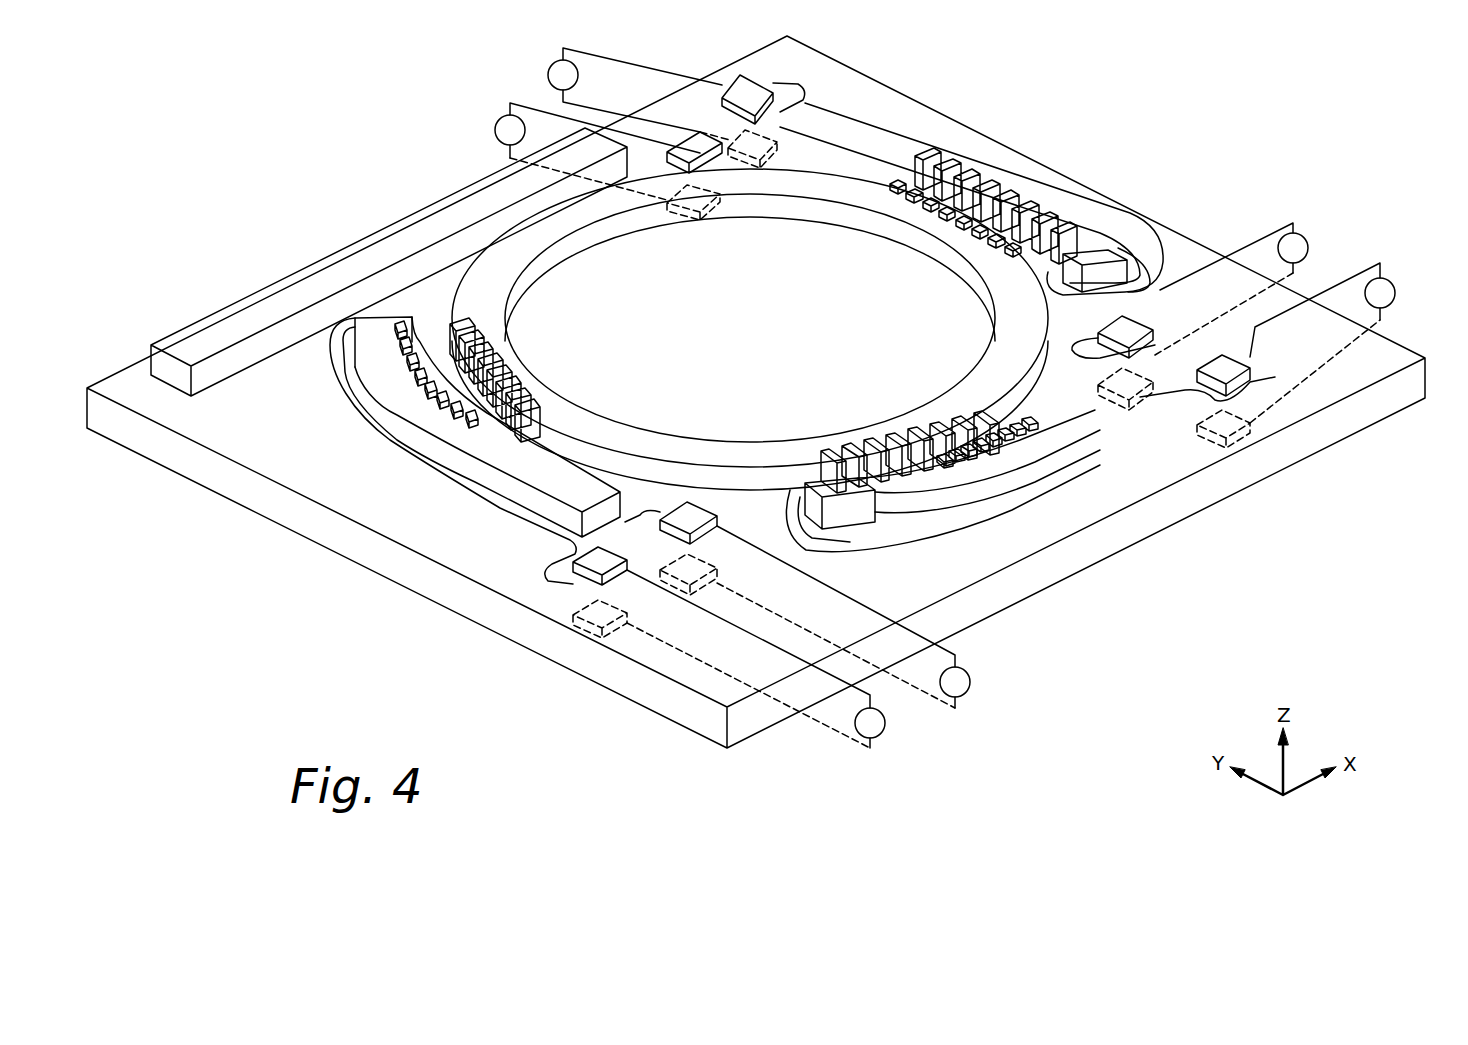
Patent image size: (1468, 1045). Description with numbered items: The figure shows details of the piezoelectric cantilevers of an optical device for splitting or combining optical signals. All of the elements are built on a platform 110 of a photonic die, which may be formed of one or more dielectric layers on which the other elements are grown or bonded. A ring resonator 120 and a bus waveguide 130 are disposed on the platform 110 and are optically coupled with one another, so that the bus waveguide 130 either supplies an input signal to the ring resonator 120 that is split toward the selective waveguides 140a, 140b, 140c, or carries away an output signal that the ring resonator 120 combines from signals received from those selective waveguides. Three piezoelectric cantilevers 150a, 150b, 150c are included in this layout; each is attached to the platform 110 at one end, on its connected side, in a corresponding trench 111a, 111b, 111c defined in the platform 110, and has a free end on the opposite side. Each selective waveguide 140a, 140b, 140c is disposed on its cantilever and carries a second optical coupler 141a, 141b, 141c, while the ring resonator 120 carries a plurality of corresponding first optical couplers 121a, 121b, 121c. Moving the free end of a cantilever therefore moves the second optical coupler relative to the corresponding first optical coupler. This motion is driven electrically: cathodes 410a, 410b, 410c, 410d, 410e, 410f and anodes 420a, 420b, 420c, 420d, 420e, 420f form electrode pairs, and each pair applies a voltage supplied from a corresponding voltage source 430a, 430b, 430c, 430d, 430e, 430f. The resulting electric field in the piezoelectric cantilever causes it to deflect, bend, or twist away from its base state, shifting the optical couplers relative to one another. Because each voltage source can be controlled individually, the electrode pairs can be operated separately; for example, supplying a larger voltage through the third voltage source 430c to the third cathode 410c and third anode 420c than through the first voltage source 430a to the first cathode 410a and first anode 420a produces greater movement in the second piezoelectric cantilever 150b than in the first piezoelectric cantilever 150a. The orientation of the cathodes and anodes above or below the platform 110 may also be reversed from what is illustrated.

The platform 110 is at (880, 85).
The trench 111a is at (337, 353).
The trench 111b is at (803, 485).
The trench 111c is at (1137, 263).
The ring resonator 120 is at (690, 442).
The first optical coupler 121a is at (492, 380).
The first optical coupler 121b is at (917, 433).
The first optical coupler 121c is at (947, 207).
The bus waveguide 130 is at (385, 240).
The selective waveguide 140a is at (441, 427).
The selective waveguide 140b is at (924, 486).
The selective waveguide 140c is at (1023, 199).
The second optical coupler 141a is at (413, 403).
The second optical coupler 141b is at (920, 467).
The second optical coupler 141c is at (1023, 202).
The piezoelectric cantilever 150a is at (417, 453).
The piezoelectric cantilever 150b is at (1020, 490).
The piezoelectric cantilever 150c is at (995, 308).
The cathode 410a is at (693, 510).
The cathode 410b is at (605, 553).
The cathode 410c is at (1127, 330).
The cathode 410d is at (1228, 368).
The cathode 410e is at (693, 140).
The cathode 410f is at (728, 88).
The anode 420a is at (713, 587).
The anode 420b is at (627, 633).
The anode 420c is at (1127, 378).
The anode 420d is at (1200, 428).
The anode 420e is at (683, 215).
The anode 420f is at (750, 150).
The voltage source 430a is at (970, 695).
The voltage source 430b is at (887, 737).
The voltage source 430c is at (1305, 235).
The voltage source 430d is at (1395, 282).
The voltage source 430e is at (495, 128).
The voltage source 430f is at (548, 72).